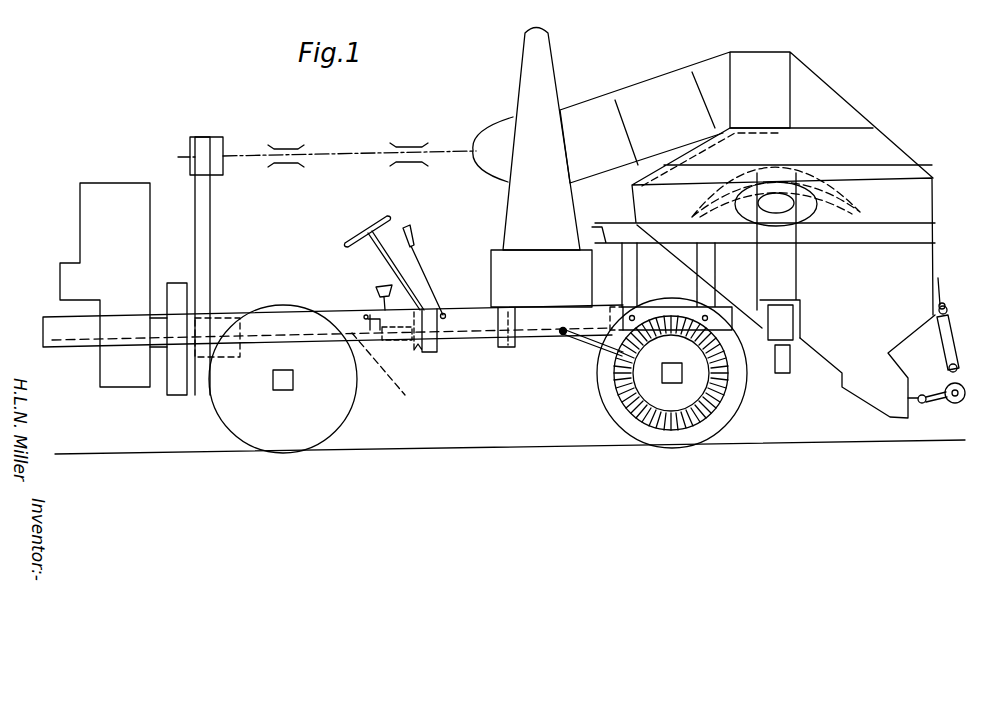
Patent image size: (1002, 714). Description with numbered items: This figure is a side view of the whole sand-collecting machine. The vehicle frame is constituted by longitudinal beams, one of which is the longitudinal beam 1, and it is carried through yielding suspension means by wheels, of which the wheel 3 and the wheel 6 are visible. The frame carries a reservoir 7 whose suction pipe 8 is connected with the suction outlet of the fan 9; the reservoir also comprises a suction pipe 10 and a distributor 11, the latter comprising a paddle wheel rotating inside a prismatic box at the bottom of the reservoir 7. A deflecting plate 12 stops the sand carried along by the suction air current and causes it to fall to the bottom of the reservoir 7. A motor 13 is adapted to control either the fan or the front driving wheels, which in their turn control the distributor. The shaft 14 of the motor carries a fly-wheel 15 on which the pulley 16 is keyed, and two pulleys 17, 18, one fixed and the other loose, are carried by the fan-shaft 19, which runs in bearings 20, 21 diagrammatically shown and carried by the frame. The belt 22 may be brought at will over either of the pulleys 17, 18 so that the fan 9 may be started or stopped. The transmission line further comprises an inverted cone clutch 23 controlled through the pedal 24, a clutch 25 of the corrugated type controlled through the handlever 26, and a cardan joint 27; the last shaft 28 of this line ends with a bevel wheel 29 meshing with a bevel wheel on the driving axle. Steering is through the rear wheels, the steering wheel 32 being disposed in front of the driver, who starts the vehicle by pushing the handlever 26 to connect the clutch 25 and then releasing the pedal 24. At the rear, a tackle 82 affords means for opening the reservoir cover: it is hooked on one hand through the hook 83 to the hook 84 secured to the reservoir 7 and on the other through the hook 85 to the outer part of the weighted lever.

The longitudinal beam 1 is at (540, 338).
The wheel 3 is at (288, 437).
The wheel 6 is at (683, 430).
The reservoir 7 is at (908, 203).
The suction pipe 8 is at (708, 75).
The fan 9 is at (543, 75).
The suction pipe 10 is at (783, 273).
The distributor 11 is at (857, 400).
The deflecting plate 12 is at (810, 155).
The motor 13 is at (118, 205).
The shaft 14 is at (389, 372).
The fly-wheel 15 is at (175, 295).
The pulley 16 is at (225, 332).
The pulley 17 is at (192, 153).
The pulley 18 is at (215, 150).
The fan-shaft 19 is at (347, 152).
The bearing 20 is at (288, 145).
The bearing 21 is at (407, 143).
The belt 22 is at (203, 248).
The inverted cone clutch 23 is at (427, 343).
The pedal 24 is at (380, 290).
The clutch 25 is at (502, 348).
The handlever 26 is at (417, 245).
The cardan joint 27 is at (565, 335).
The last shaft 28 is at (616, 362).
The bevel wheel 29 is at (650, 423).
The steering wheel 32 is at (387, 217).
The tackle 82 is at (945, 343).
The hook 83 is at (944, 304).
The hook 84 is at (940, 288).
The hook 85 is at (953, 382).